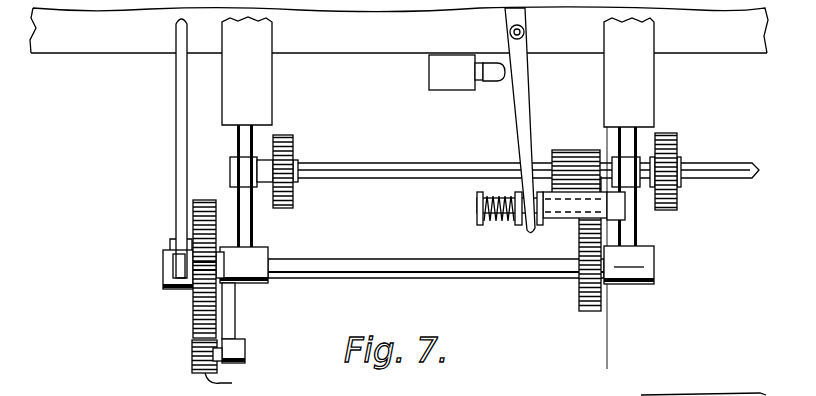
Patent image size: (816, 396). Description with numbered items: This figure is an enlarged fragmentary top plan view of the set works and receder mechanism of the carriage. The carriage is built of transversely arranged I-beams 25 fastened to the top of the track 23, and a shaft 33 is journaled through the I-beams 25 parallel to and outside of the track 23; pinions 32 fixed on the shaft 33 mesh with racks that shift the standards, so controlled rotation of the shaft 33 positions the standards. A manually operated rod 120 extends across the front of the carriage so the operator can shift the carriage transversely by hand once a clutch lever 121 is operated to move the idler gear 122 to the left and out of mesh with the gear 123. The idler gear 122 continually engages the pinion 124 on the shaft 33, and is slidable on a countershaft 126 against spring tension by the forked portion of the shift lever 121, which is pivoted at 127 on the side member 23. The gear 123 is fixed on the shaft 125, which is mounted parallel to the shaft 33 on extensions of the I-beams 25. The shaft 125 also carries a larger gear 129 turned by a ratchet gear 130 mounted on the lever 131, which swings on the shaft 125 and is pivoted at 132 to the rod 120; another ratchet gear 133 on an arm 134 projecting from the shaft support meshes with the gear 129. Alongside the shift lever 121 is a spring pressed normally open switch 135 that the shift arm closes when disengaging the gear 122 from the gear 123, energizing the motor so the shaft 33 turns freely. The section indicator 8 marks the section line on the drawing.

The section line 8- 8 is at (614, 104).
The track 23 is at (577, 33).
The I-beam 25 is at (262, 38).
The pinion 32 is at (284, 133).
The shaft 33 is at (717, 162).
The manually operated rod 120 is at (175, 115).
The clutch lever 121 is at (512, 95).
The idler gear 122 is at (588, 212).
The gear 123 is at (577, 299).
The pinion 124 is at (566, 147).
The shaft 125 is at (469, 277).
The countershaft 126 is at (480, 212).
The pivot 127 is at (508, 30).
The larger gear 129 is at (200, 314).
The ratchet gear 130 is at (203, 286).
The lever 131 is at (180, 263).
The pivot 132 is at (167, 368).
The ratchet gear 133 is at (235, 384).
The arm 134 is at (235, 321).
The switch 135 is at (435, 80).